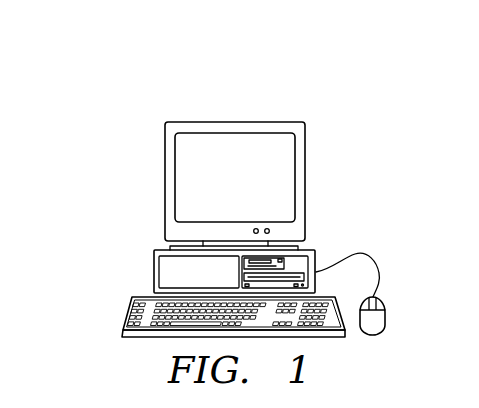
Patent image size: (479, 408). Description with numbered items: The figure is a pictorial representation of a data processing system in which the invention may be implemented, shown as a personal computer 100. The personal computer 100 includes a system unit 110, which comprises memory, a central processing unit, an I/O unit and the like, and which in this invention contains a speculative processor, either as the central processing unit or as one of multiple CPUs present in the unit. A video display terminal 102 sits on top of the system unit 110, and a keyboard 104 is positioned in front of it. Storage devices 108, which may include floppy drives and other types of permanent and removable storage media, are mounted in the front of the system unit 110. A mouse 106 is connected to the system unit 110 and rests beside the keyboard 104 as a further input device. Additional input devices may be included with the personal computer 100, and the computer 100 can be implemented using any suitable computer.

The personal computer 100 is at (258, 94).
The video display terminal 102 is at (165, 182).
The keyboard 104 is at (128, 312).
The mouse 106 is at (385, 313).
The storage devices 108 is at (282, 262).
The system unit 110 is at (154, 275).